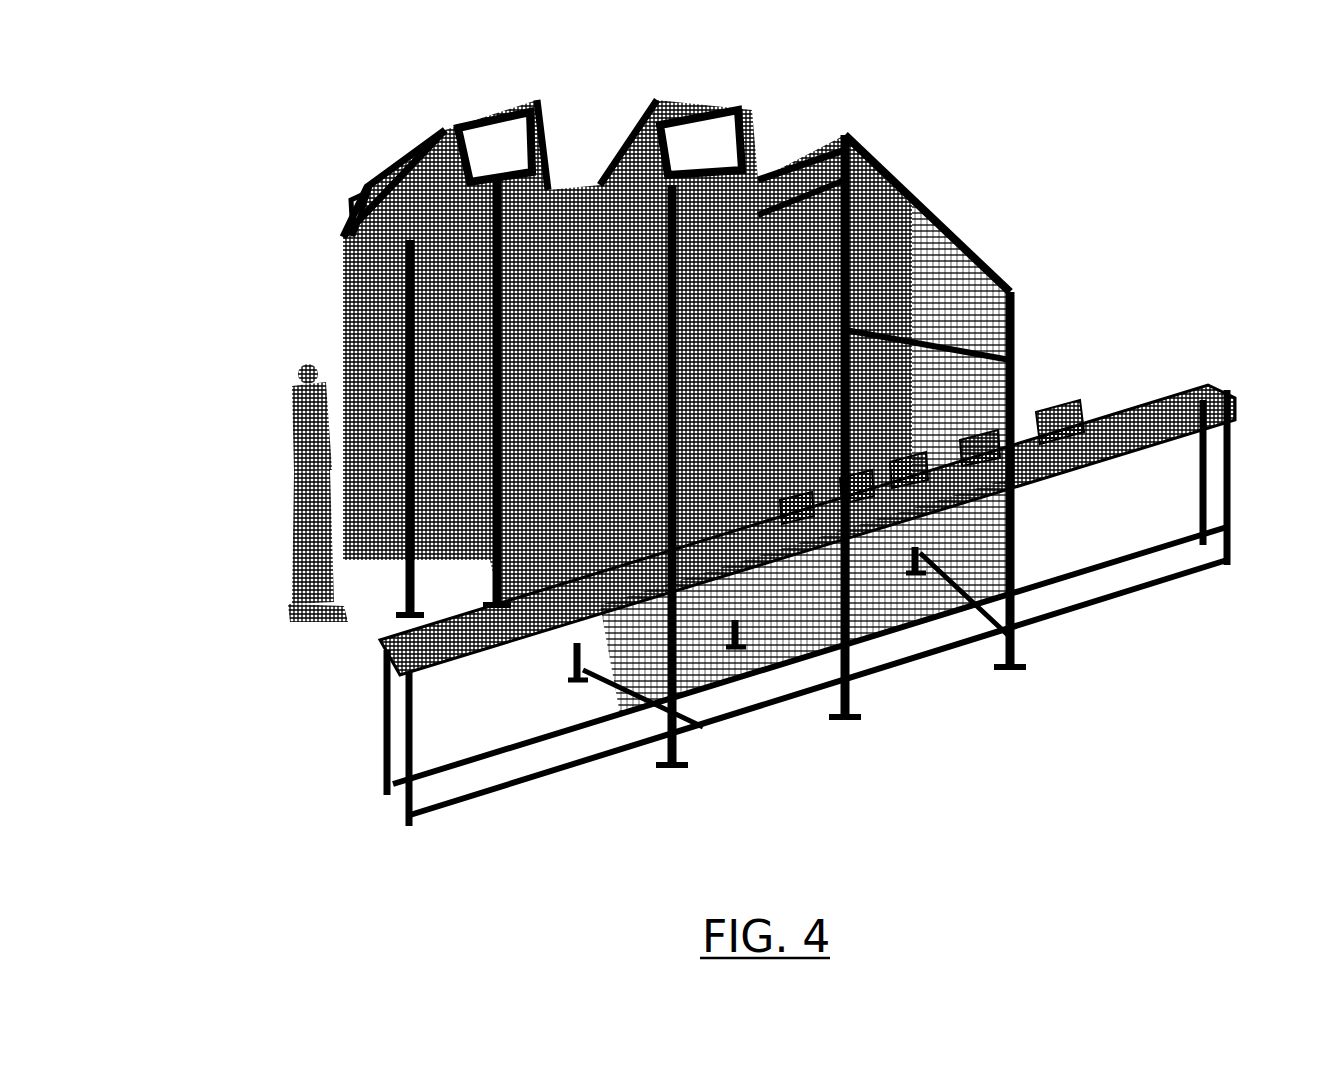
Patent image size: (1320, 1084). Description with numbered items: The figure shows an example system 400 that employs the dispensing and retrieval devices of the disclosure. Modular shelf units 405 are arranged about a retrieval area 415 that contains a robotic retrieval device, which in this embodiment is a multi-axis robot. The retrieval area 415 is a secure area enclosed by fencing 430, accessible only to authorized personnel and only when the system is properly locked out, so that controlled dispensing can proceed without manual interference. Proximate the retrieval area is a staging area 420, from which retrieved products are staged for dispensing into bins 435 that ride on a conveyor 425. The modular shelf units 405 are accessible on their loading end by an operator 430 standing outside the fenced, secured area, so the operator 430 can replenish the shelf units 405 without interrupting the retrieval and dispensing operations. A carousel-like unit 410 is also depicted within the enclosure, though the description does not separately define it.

The system 400 is at (701, 433).
The modular shelf units 405 is at (707, 103).
The carousel / rotary tool unit 410 is at (695, 247).
The retrieval area 415 is at (633, 433).
The staging area 420 is at (743, 495).
The conveyor 425 is at (1097, 423).
The fencing / operator 430 is at (970, 253).
The bins 435 is at (1042, 413).